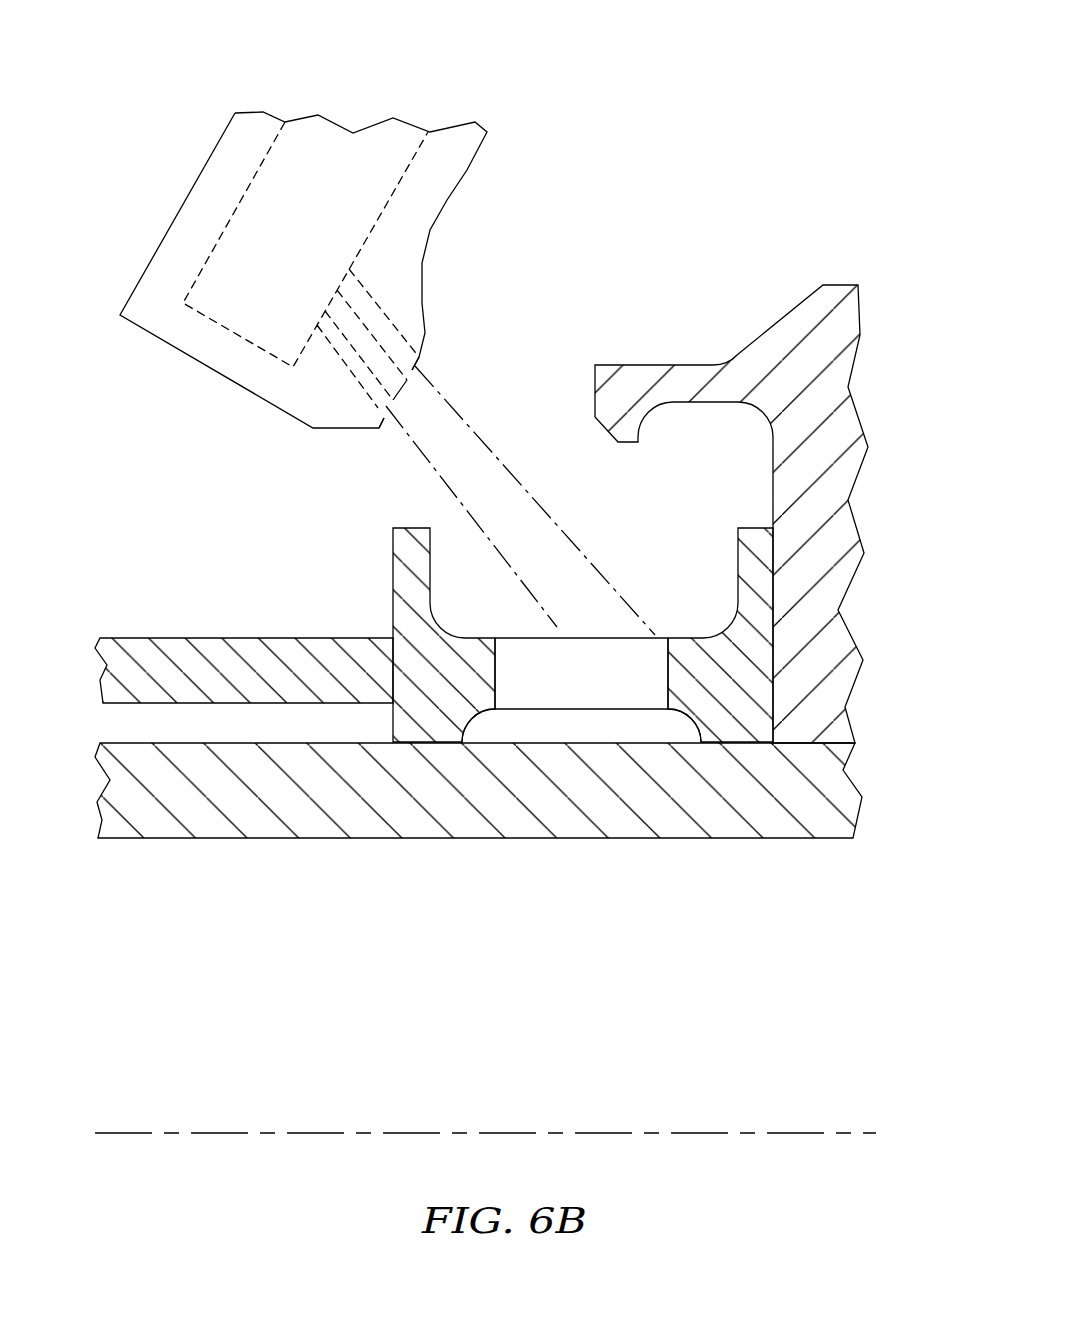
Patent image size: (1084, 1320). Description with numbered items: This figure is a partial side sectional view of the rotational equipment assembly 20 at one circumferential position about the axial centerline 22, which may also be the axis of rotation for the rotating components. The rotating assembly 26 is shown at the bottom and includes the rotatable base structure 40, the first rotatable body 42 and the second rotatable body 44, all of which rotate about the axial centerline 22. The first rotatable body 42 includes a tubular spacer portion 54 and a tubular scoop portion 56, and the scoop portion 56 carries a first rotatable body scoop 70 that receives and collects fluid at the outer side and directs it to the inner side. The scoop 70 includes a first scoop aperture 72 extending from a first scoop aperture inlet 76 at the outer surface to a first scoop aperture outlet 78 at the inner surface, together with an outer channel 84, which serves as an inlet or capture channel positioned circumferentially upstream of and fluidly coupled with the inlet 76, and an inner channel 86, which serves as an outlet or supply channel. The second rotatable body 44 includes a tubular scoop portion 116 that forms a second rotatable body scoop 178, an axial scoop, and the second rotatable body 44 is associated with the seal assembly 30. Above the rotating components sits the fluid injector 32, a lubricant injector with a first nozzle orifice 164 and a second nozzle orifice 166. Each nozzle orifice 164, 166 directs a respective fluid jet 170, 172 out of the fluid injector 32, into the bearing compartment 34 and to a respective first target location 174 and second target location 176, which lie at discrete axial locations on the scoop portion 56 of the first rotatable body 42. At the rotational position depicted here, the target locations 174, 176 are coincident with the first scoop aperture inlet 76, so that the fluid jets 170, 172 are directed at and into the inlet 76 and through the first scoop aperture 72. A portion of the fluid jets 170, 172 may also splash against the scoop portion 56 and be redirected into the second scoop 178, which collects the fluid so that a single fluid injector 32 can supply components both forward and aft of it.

The rotational equipment assembly 20 is at (190, 73).
The axial centerline 22 is at (864, 1130).
The rotating assembly 26 is at (83, 788).
The seal assembly 30 is at (825, 238).
The fluid injector 32 is at (494, 106).
The bearing compartment 34 is at (663, 208).
The rotatable base structure 40 is at (862, 787).
The first rotatable body 42 is at (376, 571).
The second rotatable body 44 is at (860, 616).
The spacer portion 54 is at (228, 630).
The scoop portion 56 is at (686, 627).
The first rotatable body scoop 70 is at (538, 697).
The first scoop aperture 72 is at (574, 683).
The first scoop aperture inlet 76 is at (593, 638).
The first scoop aperture outlet 78 is at (595, 711).
The outer channel 84 is at (648, 552).
The inner channel 86 is at (491, 727).
The scoop portion 116 is at (679, 360).
The nozzle orifice 164 is at (382, 408).
The nozzle orifice 166 is at (416, 364).
The fluid jet 170 is at (440, 467).
The fluid jet 172 is at (542, 500).
The first target location 174 is at (560, 634).
The second target location 176 is at (660, 637).
The second rotatable body scoop 178 is at (757, 448).